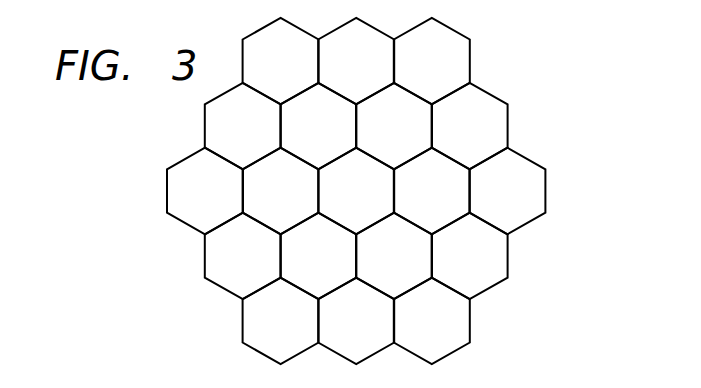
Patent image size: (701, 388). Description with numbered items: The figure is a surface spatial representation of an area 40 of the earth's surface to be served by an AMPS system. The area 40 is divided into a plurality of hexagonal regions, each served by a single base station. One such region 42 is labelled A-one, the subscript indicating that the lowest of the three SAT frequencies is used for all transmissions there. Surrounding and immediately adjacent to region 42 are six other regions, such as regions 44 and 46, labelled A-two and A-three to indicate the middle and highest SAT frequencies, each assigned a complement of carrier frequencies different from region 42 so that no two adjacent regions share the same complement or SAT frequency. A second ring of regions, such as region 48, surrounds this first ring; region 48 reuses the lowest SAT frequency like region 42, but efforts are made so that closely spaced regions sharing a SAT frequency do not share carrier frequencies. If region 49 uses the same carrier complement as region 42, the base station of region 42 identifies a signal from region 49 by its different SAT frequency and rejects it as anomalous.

The area 40 is at (356, 191).
The region 42 is at (371, 218).
The region 44 is at (409, 154).
The region 46 is at (447, 218).
The region 48 is at (371, 89).
The region 49 is at (447, 89).